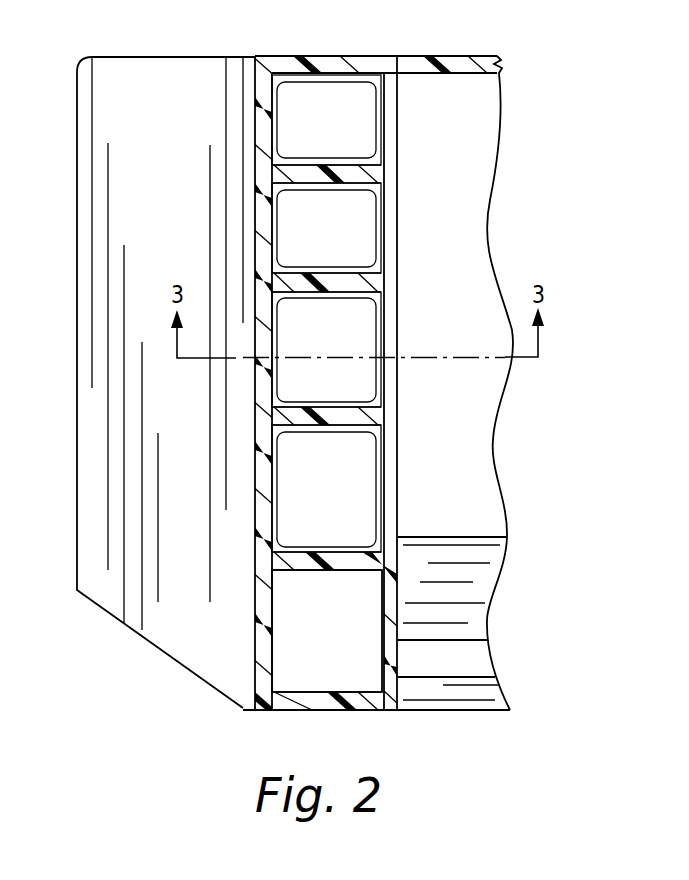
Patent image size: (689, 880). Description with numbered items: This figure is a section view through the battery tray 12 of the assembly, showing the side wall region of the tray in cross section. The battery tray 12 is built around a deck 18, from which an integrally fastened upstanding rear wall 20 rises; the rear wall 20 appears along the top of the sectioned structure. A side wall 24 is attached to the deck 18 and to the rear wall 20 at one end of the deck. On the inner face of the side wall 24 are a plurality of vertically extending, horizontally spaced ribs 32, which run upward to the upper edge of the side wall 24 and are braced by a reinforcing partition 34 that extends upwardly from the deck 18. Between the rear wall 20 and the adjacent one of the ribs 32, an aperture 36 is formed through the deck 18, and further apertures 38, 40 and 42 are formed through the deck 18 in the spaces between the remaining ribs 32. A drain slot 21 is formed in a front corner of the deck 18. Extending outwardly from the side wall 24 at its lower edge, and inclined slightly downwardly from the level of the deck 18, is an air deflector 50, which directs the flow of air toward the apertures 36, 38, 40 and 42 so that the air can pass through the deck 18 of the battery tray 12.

The battery tray 12 is at (528, 172).
The deck 18 is at (460, 292).
The rear wall 20 is at (460, 74).
The drain slot 21 is at (462, 640).
The side wall 24 is at (255, 644).
The ribs 32 is at (332, 165).
The reinforcing partition 34 is at (398, 381).
The aperture 36 is at (340, 82).
The aperture 38 is at (320, 190).
The aperture 40 is at (278, 318).
The aperture 42 is at (278, 502).
The air deflector 50 is at (124, 628).